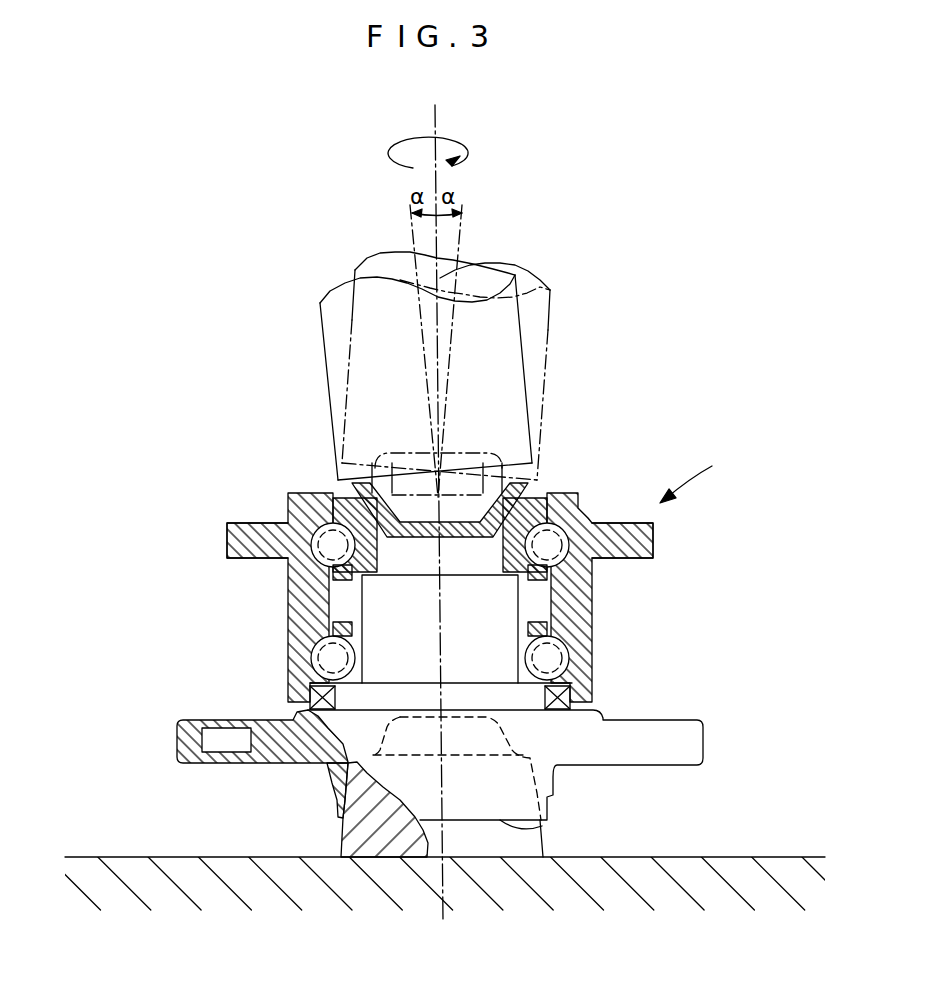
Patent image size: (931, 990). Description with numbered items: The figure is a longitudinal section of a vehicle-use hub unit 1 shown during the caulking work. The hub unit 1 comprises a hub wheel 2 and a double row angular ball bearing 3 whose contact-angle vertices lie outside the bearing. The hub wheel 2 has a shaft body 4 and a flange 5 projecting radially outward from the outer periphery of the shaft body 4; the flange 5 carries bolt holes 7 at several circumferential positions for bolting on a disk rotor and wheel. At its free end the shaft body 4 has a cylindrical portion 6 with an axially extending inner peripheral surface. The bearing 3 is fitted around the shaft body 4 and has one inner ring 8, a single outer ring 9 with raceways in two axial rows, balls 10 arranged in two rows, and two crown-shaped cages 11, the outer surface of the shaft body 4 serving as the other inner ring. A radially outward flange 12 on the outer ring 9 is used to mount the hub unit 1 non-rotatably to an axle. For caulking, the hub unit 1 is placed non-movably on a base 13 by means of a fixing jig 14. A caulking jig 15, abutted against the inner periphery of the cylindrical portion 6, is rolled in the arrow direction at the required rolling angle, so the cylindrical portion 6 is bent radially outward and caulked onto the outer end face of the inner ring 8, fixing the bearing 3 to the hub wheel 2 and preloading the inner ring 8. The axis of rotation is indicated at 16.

The hub unit 1 is at (694, 472).
The hub wheel 2 is at (540, 827).
The double row angular ball bearing 3 is at (290, 648).
The shaft body 4 is at (490, 609).
The flange 5 is at (178, 748).
The cylindrical portion 6 is at (530, 484).
The bolt holes 7 is at (226, 732).
The inner ring 8 is at (352, 486).
The outer ring 9 is at (288, 597).
The balls 10 is at (314, 522).
The crown-shaped cages 11 is at (550, 579).
The radially outward flange 12 is at (226, 526).
The base 13 is at (722, 857).
The fixing jig 14 is at (537, 842).
The caulking jig 15 is at (518, 263).
The rotation axis 16 is at (441, 912).